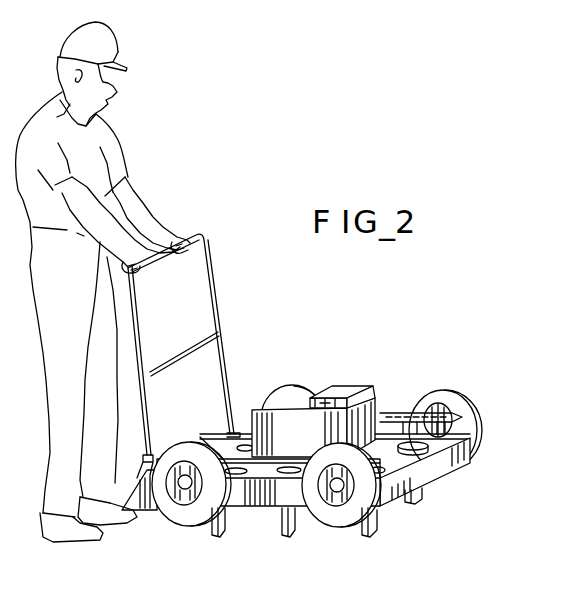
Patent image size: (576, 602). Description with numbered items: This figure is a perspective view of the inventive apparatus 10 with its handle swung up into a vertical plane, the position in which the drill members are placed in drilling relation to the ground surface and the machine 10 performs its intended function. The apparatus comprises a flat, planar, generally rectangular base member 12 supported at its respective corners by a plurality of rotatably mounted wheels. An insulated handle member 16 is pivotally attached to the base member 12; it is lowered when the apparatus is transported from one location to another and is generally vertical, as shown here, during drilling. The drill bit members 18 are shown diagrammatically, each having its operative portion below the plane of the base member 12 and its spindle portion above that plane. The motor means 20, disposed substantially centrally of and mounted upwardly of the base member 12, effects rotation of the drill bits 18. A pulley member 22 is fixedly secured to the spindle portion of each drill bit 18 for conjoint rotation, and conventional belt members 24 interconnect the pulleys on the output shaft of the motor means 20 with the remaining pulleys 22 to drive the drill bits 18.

The inventive apparatus 10 is at (459, 292).
The base member 12 is at (470, 462).
The handle member 16 is at (240, 312).
The drill bit members 18 is at (225, 533).
The motor means 20 is at (313, 421).
The pulley member 22 is at (462, 417).
The belt members 24 is at (416, 453).